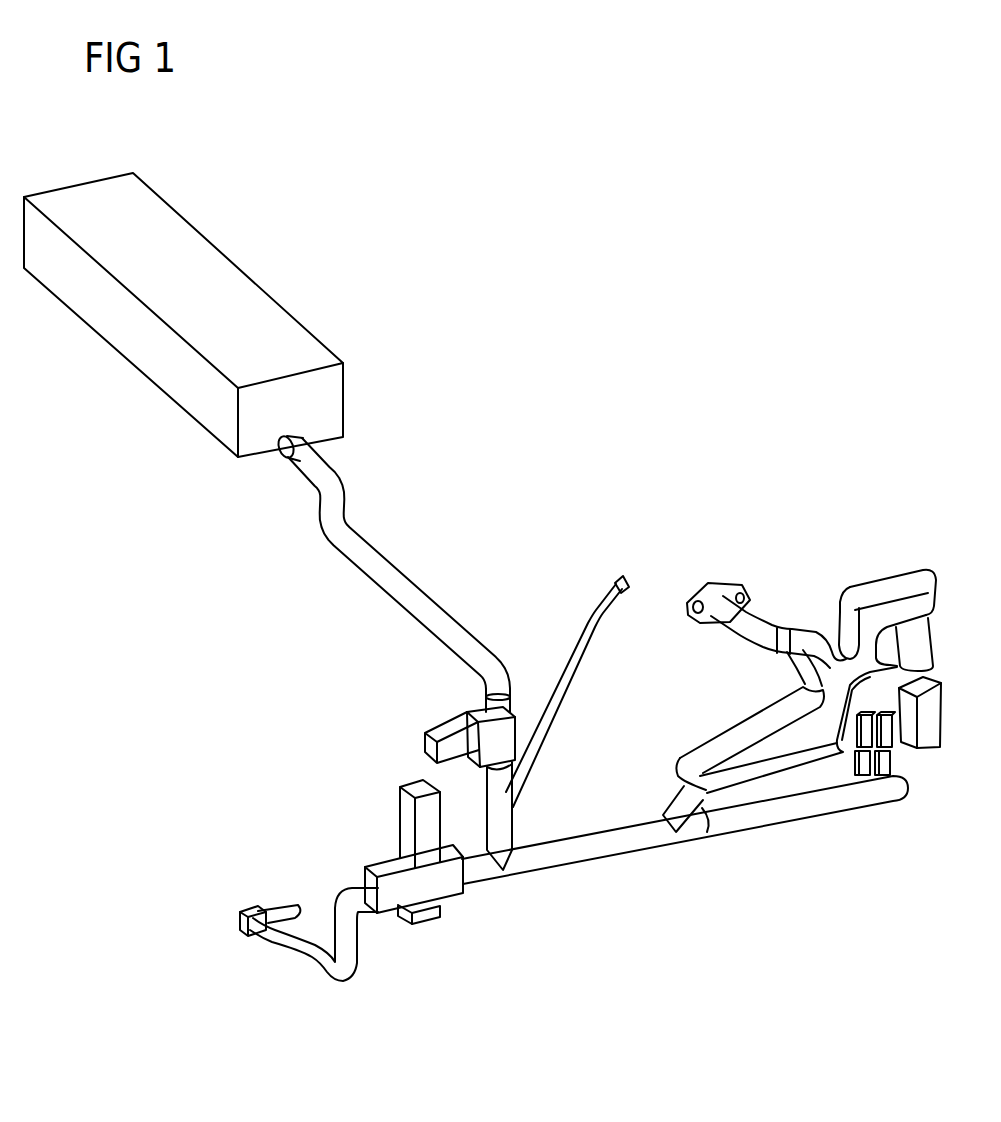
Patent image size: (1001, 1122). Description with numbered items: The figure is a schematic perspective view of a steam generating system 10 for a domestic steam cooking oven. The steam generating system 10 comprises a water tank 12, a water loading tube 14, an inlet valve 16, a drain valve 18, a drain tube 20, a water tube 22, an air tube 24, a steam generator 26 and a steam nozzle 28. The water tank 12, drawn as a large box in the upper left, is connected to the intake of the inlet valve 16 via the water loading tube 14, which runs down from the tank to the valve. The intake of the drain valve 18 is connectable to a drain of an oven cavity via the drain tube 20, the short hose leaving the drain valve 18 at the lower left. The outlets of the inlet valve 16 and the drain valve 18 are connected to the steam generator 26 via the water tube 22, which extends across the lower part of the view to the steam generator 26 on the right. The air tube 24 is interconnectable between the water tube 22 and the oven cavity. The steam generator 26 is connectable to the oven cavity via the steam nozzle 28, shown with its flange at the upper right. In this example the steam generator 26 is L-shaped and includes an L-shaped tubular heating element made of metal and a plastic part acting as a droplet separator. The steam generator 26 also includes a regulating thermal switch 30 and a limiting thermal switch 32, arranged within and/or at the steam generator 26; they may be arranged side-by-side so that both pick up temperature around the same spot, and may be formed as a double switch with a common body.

The steam generating system 10 is at (563, 215).
The water tank 12 is at (188, 250).
The water loading tube 14 is at (395, 582).
The inlet valve 16 is at (472, 716).
The drain valve 18 is at (419, 918).
The drain tube 20 is at (296, 950).
The water tube 22 is at (610, 850).
The air tube 24 is at (599, 612).
The steam generator 26 is at (889, 580).
The steam nozzle 28 is at (714, 592).
The regulating thermal switch 30 is at (860, 778).
The limiting thermal switch 32 is at (915, 752).